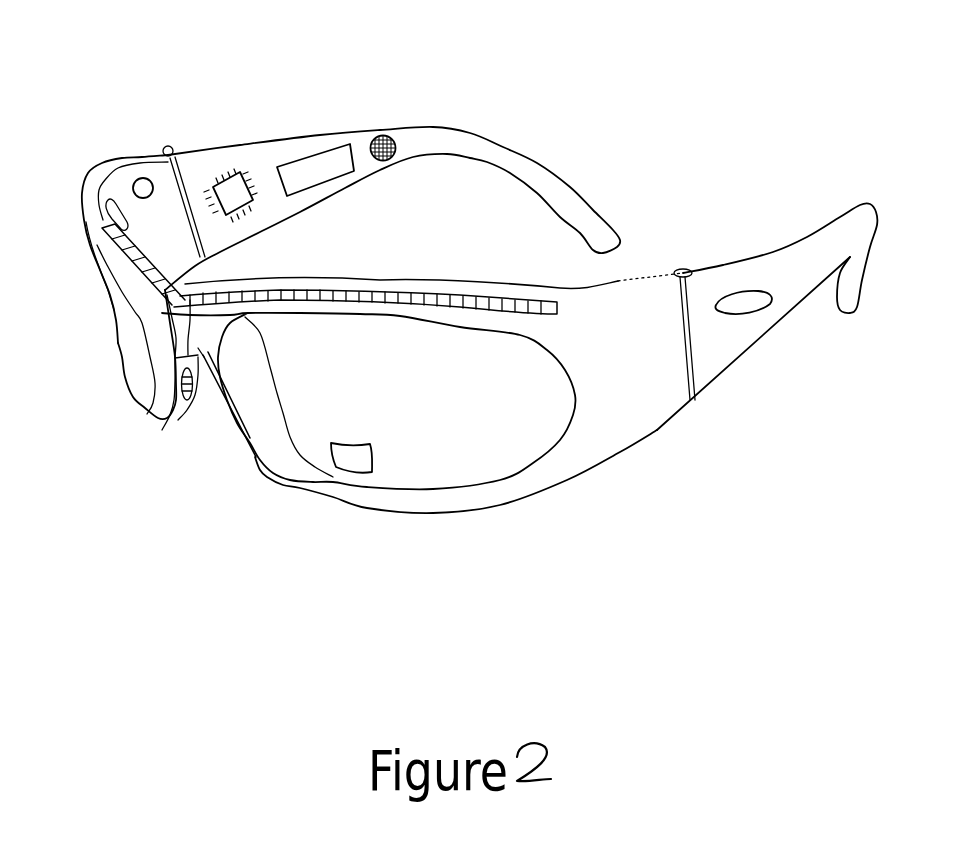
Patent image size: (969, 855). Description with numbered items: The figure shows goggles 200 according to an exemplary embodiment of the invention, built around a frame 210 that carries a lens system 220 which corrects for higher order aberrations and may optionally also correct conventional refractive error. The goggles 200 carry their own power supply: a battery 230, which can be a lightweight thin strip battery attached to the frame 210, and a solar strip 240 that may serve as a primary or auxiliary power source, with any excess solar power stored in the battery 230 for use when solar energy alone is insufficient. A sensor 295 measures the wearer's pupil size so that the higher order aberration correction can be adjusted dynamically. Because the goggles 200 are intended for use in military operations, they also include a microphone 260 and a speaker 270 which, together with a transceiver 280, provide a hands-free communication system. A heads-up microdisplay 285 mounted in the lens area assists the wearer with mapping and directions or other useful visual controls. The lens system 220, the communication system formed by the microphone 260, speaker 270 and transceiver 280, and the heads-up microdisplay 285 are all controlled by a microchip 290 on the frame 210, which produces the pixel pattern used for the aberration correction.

The goggles 200 is at (707, 123).
The frame 210 is at (613, 455).
The lens system 220 is at (438, 455).
The battery 230 is at (312, 160).
The solar strip 240 is at (453, 293).
The microphone 260 is at (203, 383).
The speaker 270 is at (398, 140).
The transceiver 280 is at (762, 308).
The heads-up microdisplay 285 is at (347, 473).
The microchip 290 is at (228, 168).
The sensor 295 is at (136, 180).